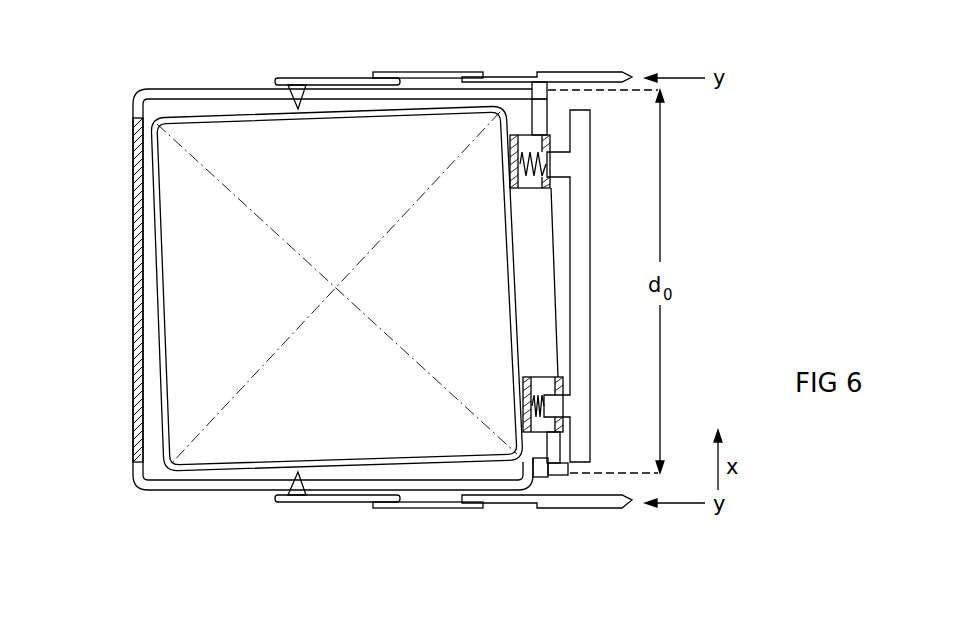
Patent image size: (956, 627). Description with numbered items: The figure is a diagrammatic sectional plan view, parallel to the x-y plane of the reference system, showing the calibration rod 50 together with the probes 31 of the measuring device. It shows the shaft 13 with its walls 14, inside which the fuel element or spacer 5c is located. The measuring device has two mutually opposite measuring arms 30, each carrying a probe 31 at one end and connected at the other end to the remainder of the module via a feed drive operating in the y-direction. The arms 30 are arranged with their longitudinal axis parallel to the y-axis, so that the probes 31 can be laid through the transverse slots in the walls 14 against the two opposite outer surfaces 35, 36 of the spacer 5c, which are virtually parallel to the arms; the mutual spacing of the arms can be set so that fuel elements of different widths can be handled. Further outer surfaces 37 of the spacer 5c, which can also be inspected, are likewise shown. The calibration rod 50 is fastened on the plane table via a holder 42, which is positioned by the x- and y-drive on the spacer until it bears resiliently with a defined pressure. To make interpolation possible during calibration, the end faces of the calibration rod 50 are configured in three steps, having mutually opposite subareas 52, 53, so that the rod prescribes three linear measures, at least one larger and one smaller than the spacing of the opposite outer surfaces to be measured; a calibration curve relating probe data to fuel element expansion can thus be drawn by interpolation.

The shaft 13 is at (133, 81).
The walls 14 is at (133, 228).
The measuring arms 30 is at (415, 72).
The probe 31 is at (297, 90).
The outer surface 35 is at (184, 104).
The outer surface 36 is at (355, 475).
The further outer surfaces 37 is at (157, 340).
The holder 42 is at (553, 163).
The calibration rod 50 is at (545, 103).
The subareas 52 is at (540, 82).
The subareas 53 is at (540, 478).
The spacer 5c is at (168, 163).